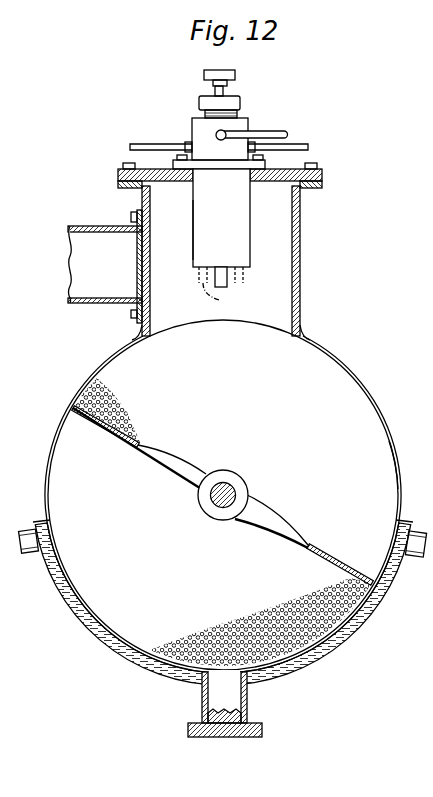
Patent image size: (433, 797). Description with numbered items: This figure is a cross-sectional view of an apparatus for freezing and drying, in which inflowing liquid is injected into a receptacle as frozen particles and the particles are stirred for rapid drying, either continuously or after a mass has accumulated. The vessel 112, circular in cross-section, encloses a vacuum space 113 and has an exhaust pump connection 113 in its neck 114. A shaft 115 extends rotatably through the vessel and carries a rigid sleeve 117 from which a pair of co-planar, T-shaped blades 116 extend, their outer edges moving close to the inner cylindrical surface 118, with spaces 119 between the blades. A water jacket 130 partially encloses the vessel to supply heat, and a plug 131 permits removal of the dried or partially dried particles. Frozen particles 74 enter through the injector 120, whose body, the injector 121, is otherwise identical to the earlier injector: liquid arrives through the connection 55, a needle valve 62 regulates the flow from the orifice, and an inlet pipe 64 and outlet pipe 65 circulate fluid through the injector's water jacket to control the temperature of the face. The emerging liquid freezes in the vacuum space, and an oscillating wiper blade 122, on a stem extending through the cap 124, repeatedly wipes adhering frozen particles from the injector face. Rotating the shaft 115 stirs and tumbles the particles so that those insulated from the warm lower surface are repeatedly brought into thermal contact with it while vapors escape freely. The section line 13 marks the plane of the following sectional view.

The section line 13- 13 is at (219, 45).
The needle valve 62 is at (233, 87).
The inlet pipe 55 is at (284, 131).
The outlet pipe 65 is at (158, 145).
The inlet pipe 64 is at (302, 146).
The cap 124 is at (293, 167).
The neck 114 is at (302, 298).
The vacuum space 113 is at (97, 226).
The vessel 112 is at (388, 428).
The inner cylindrical surface 118 is at (383, 473).
The injector 120 is at (251, 219).
The injector 121 is at (197, 242).
The wiper blade 122 is at (222, 288).
The frozen particles 74 is at (122, 413).
The spaces 119 is at (197, 548).
The blades 116 is at (122, 441).
The sleeve 117 is at (233, 471).
The shaft 115 is at (234, 489).
The water jacket 130 is at (348, 643).
The plug 131 is at (248, 713).